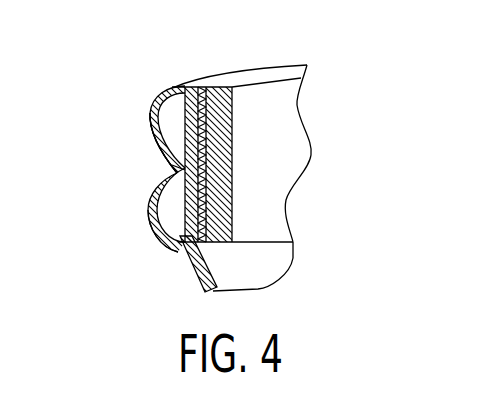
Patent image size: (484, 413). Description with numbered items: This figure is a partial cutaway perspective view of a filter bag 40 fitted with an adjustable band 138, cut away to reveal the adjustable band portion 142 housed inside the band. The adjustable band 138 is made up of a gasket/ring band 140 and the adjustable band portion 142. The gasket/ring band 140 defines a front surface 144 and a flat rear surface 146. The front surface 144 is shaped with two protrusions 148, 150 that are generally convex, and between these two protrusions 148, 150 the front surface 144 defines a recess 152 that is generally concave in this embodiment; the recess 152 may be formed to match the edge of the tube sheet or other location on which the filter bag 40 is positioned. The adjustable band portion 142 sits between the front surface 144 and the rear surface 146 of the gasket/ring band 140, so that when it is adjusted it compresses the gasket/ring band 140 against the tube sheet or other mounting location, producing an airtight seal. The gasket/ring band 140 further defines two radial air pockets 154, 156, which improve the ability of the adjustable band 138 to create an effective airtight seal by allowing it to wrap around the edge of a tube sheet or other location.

The filter bag 40 is at (262, 263).
The adjustable band 138 is at (83, 110).
The gasket/ring band 140 is at (133, 256).
The adjustable band portion 142 is at (202, 88).
The front surface 144 is at (149, 128).
The flat rear surface 146 is at (290, 148).
The protrusion 148 is at (155, 97).
The protrusion 150 is at (148, 218).
The recess 152 is at (170, 170).
The radial air pocket 154 is at (172, 88).
The radial air pocket 156 is at (173, 222).